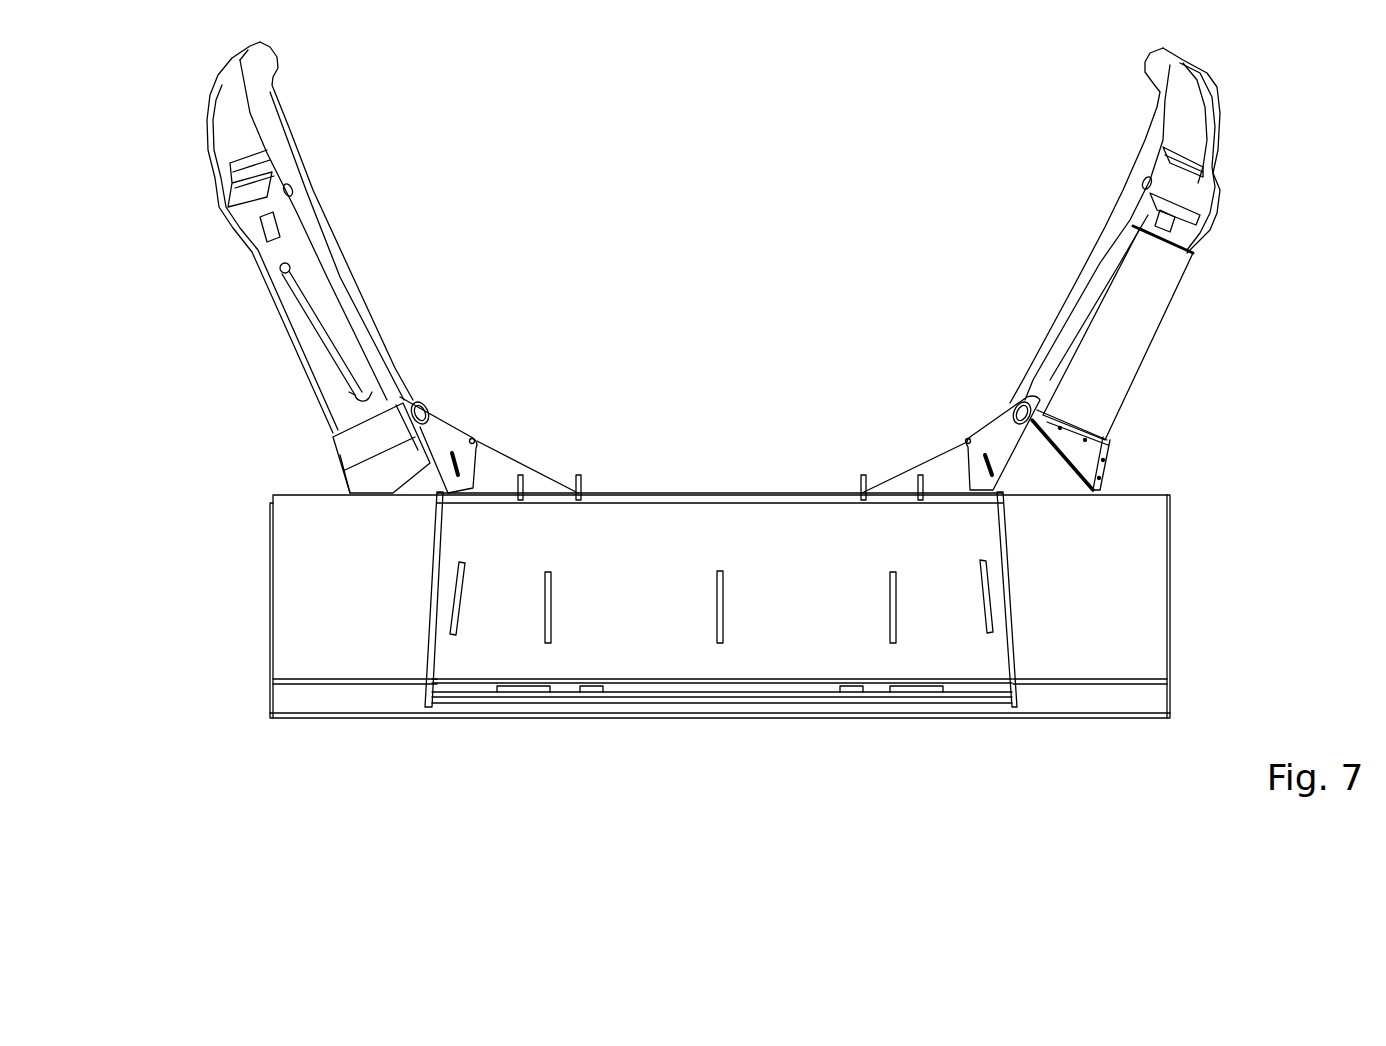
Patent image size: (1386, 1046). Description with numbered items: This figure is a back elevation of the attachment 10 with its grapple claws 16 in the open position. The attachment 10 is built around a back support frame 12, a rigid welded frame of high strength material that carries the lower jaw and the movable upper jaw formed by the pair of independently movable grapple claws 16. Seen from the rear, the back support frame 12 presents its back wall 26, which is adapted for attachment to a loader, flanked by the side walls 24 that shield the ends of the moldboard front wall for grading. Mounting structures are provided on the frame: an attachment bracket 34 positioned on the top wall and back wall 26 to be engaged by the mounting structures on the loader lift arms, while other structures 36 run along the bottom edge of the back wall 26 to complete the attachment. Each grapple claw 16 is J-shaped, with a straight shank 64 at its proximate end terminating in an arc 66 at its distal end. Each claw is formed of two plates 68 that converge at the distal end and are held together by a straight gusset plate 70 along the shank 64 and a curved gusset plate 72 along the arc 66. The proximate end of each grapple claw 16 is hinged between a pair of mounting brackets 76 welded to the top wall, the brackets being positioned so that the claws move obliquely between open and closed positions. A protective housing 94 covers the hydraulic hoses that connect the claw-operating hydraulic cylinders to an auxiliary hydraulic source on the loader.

The attachment 10 is at (1303, 332).
The back support frame 12 is at (1172, 562).
The grapple claws 16 is at (344, 255).
The side walls 24 is at (270, 592).
The back wall 26 is at (308, 681).
The attachment bracket 34 is at (672, 498).
The other structures 36 is at (667, 690).
The straight shank 64 is at (398, 343).
The arc 66 is at (270, 95).
The plates 68 is at (258, 132).
The straight gusset plate 70 is at (352, 333).
The curved gusset plate 72 is at (237, 122).
The mounting brackets 76 is at (342, 470).
The protective housing 94 is at (1152, 317).